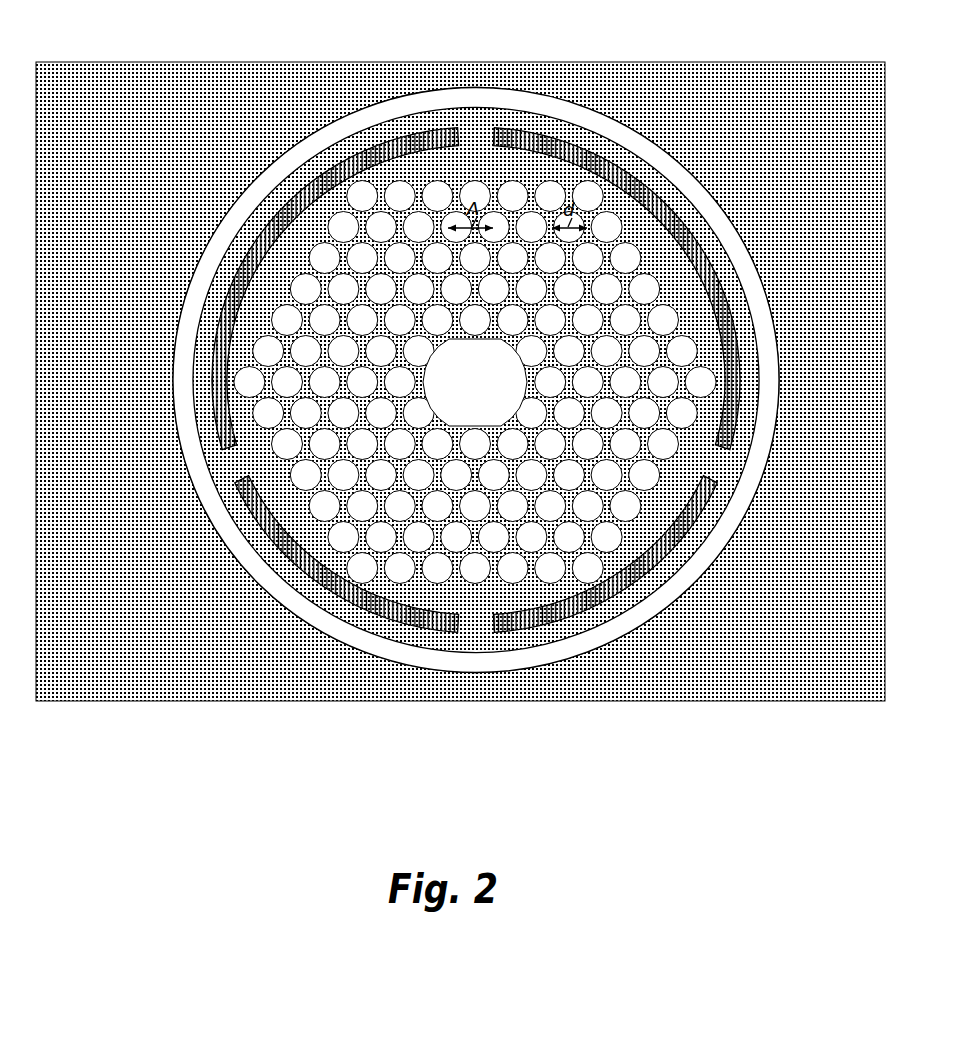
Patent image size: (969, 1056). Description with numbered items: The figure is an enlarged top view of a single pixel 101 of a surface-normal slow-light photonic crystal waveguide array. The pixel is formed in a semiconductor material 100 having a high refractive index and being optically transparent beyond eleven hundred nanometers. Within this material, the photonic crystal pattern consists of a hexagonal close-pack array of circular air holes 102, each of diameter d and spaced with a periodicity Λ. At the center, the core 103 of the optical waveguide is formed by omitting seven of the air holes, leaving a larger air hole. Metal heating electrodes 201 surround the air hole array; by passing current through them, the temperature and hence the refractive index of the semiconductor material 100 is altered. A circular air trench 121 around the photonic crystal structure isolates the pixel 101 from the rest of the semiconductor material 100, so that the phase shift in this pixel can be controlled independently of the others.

The semiconductor material 100 is at (267, 200).
The pixel 101 is at (477, 705).
The air holes 102 is at (658, 320).
The core 103 is at (470, 386).
The air trench 121 is at (642, 151).
The metal heating electrodes 201 is at (227, 448).